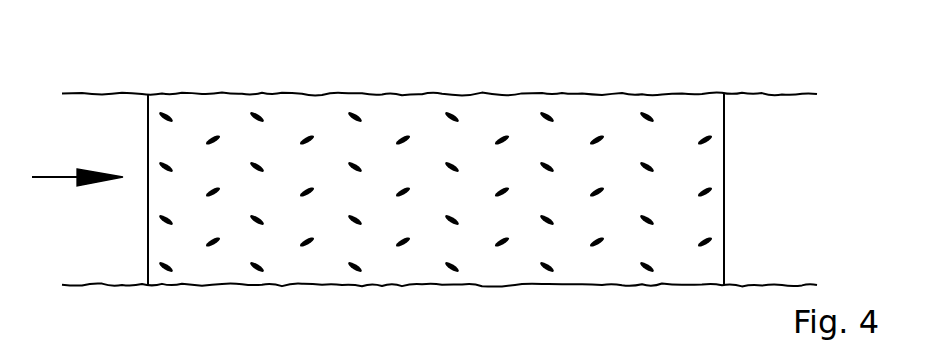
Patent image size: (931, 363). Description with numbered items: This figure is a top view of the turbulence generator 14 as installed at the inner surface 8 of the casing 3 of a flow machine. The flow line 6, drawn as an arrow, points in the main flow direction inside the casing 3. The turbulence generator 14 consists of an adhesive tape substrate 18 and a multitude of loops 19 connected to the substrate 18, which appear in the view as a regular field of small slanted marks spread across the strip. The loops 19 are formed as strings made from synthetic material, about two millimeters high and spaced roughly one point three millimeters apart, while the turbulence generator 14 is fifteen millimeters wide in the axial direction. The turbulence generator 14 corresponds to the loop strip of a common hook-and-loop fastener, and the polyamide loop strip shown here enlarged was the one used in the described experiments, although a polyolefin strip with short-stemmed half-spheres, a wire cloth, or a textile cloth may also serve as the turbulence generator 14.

The casing 3 is at (747, 253).
The flow line 6 is at (58, 177).
The inner surface 8 is at (745, 125).
The turbulence generator 14 is at (507, 118).
The adhesive tape substrate 18 is at (407, 262).
The loops 19 is at (643, 165).